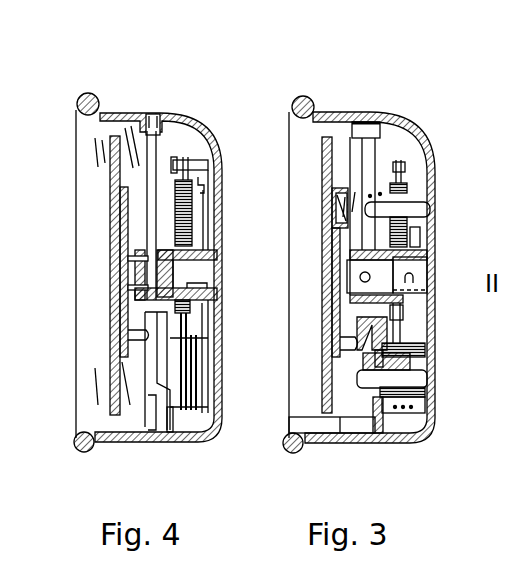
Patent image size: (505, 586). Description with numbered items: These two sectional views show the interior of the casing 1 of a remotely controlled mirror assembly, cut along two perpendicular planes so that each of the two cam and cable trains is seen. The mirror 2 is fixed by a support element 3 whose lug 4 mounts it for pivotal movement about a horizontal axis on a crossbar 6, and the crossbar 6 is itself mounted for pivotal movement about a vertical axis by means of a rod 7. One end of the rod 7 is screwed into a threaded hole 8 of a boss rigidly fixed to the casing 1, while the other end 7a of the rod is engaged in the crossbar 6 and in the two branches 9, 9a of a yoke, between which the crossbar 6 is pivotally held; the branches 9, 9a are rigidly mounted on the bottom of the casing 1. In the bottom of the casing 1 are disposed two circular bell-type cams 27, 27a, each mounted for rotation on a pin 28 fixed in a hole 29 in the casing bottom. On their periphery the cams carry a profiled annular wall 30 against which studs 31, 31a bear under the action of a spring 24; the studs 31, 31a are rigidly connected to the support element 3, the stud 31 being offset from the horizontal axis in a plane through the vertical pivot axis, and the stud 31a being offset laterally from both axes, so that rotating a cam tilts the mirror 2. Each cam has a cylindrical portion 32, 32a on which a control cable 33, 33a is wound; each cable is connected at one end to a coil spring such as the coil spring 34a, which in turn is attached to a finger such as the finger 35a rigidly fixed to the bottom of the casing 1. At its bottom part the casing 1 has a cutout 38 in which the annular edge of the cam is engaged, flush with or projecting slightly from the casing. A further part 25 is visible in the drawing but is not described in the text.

In FIG. 4, the casing 1 is at (208, 340).
In FIG. 3, the casing 1 is at (433, 221).
In FIG. 4, the mirror 2 is at (116, 148).
In FIG. 3, the mirror 2 is at (322, 148).
In FIG. 4, the support element 3 is at (127, 260).
In FIG. 3, the support element 3 is at (322, 268).
In FIG. 3, the lug 4 is at (376, 268).
In FIG. 4, the crossbar 6 is at (152, 282).
In FIG. 3, the rod 7 is at (366, 165).
In FIG. 4, the other end of the rod 7a is at (118, 288).
In FIG. 3, the threaded hole 8 is at (365, 128).
In FIG. 4, the branch of yoke 9 is at (147, 250).
In FIG. 3, the branch of yoke 9 is at (370, 255).
In FIG. 4, the branch of yoke 9a is at (192, 283).
In FIG. 3, the branch of yoke 9a is at (415, 304).
In FIG. 3, the spring 24 is at (362, 195).
In FIG. 3, the lever bar 25 is at (408, 208).
In FIG. 3, the circular bell-type cam 27 is at (360, 415).
In FIG. 4, the circular bell-type cam 27a is at (160, 417).
In FIG. 3, the pin 28 is at (378, 380).
In FIG. 3, the hole 29 is at (410, 387).
In FIG. 3, the profiled annular wall 30 is at (360, 321).
In FIG. 3, the stud 31 is at (350, 343).
In FIG. 4, the stud 31a is at (142, 337).
In FIG. 3, the cylindrical portion 32 is at (377, 437).
In FIG. 4, the cylindrical portion 32a is at (175, 412).
In FIG. 3, the control cable 33 is at (402, 437).
In FIG. 4, the control cable 33a is at (192, 398).
In FIG. 4, the coil spring 34a is at (183, 224).
In FIG. 4, the finger 35a is at (193, 163).
In FIG. 3, the cutout 38 is at (348, 437).